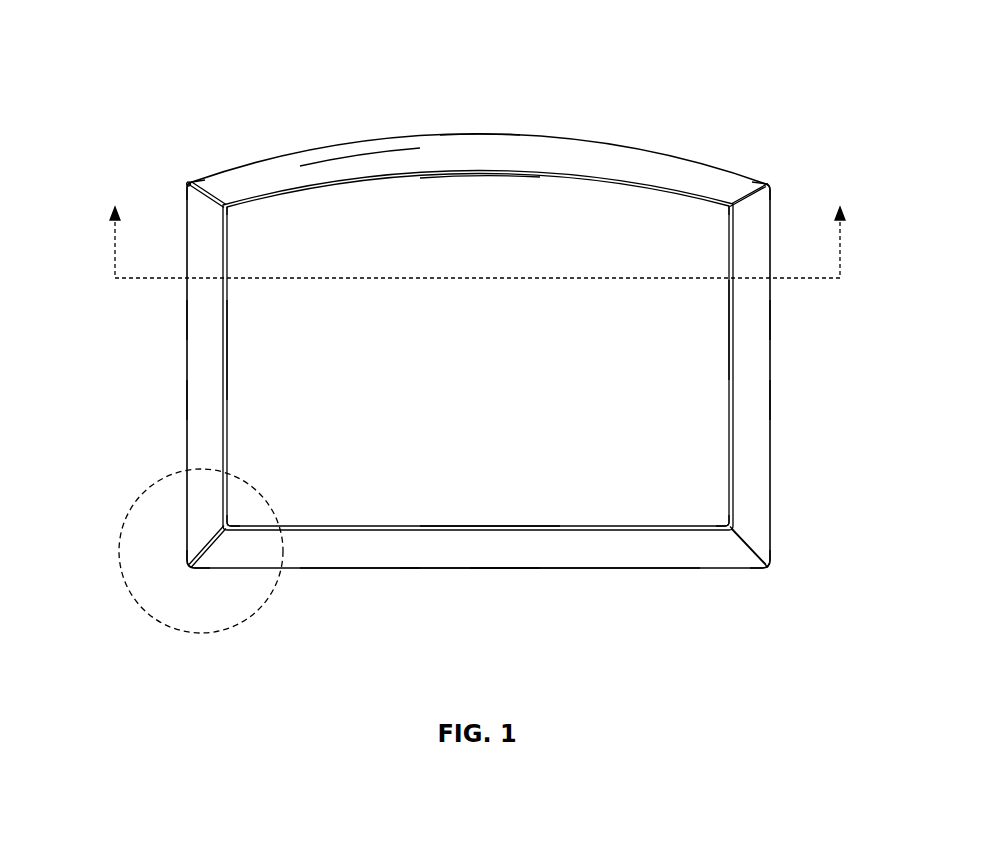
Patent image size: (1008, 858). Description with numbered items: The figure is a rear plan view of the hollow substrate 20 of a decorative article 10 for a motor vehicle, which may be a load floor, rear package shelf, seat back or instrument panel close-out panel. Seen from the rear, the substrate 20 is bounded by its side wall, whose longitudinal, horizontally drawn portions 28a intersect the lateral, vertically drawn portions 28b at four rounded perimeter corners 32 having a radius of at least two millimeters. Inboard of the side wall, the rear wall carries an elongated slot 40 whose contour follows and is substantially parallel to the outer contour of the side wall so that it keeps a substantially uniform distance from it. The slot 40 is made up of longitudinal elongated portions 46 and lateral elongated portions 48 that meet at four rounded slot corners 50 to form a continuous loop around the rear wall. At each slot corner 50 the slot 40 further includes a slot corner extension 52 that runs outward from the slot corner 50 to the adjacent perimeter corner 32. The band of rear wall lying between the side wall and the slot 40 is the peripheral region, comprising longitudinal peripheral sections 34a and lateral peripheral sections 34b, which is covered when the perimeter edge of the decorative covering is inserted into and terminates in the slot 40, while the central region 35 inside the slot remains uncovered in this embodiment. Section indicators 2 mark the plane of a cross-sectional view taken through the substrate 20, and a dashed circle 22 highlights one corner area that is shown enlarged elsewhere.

The decorative article 10 is at (150, 65).
The substrate 20 is at (586, 118).
The section line 2- 2 is at (478, 222).
The detail region 22 is at (190, 632).
The longitudinal portions of the side wall 28a is at (478, 133).
The lateral portions of the side wall 28b is at (187, 392).
The perimeter corners 32 is at (187, 168).
The longitudinal peripheral sections 34a is at (360, 158).
The lateral peripheral sections 34b is at (205, 315).
The central region 35 is at (461, 356).
The slot 40 is at (578, 542).
The longitudinal elongated portions of the slot 46 is at (450, 174).
The lateral elongated portions of the slot 48 is at (225, 370).
The slot corners 50 is at (232, 205).
The slot corner extension 52 is at (213, 185).